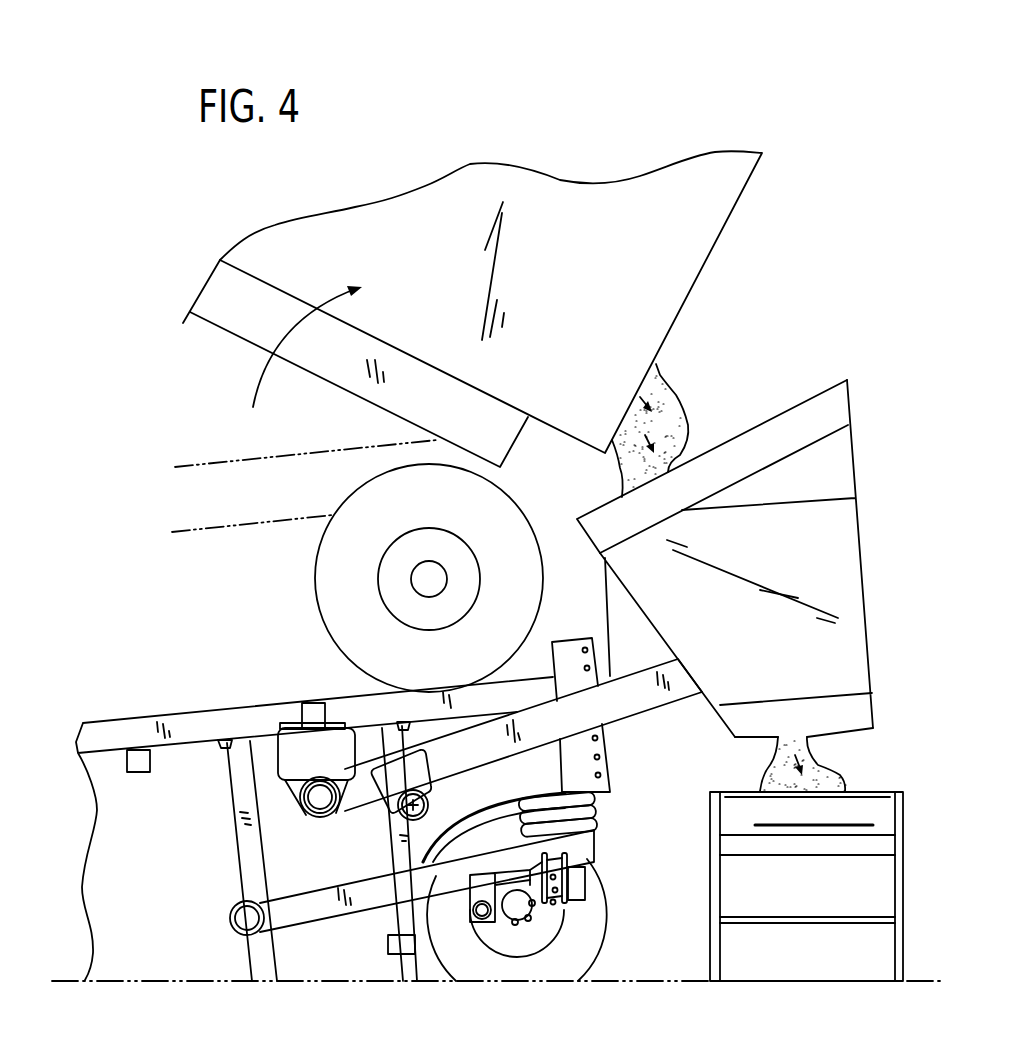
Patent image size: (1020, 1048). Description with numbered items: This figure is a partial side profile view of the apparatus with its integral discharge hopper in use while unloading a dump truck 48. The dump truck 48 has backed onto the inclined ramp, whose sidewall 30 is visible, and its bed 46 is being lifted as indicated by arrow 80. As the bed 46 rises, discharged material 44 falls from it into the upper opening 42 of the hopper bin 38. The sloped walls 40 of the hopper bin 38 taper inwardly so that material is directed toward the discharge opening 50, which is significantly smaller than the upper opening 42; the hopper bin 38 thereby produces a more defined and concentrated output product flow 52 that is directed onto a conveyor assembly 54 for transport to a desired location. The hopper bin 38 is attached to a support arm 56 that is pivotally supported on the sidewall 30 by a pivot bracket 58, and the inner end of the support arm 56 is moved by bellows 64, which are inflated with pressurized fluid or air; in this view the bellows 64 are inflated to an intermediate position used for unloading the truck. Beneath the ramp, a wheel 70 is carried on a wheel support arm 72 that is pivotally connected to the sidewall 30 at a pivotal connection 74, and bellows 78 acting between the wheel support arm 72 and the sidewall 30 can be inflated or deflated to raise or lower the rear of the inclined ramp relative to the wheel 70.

The sidewall 30 is at (160, 948).
The hopper bin 38 is at (877, 453).
The sloped wall 40 is at (838, 573).
The upper opening 42 is at (775, 415).
The discharged material 44 is at (668, 413).
The bed 46 is at (692, 229).
The dump truck 48 is at (389, 132).
The discharge opening 50 is at (850, 730).
The output product flow 52 is at (778, 758).
The conveyor assembly 54 is at (710, 883).
The support arm 56 is at (627, 697).
The pivot bracket 58 is at (422, 775).
The bellows 64 is at (307, 753).
The wheel 70 is at (583, 947).
The wheel support arm 72 is at (303, 898).
The pivotal connection 74 is at (245, 918).
The bellows 78 is at (595, 803).
The arrow 80 is at (324, 303).